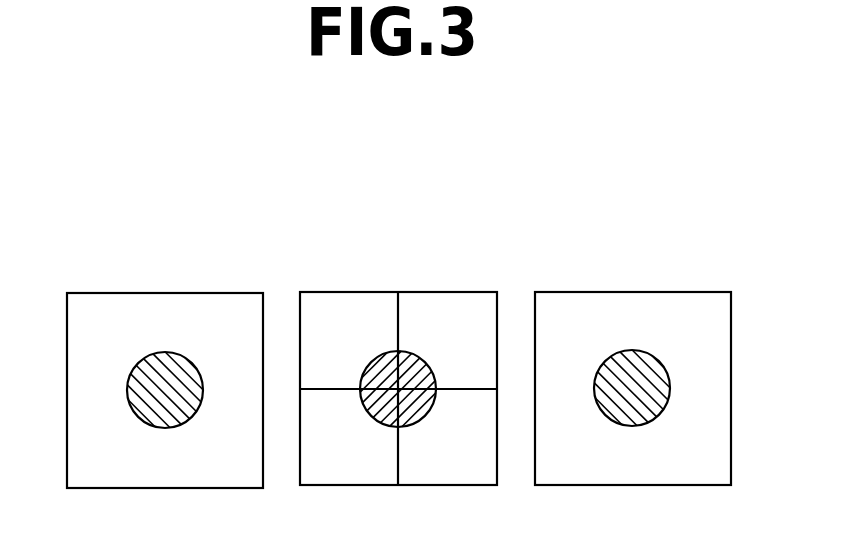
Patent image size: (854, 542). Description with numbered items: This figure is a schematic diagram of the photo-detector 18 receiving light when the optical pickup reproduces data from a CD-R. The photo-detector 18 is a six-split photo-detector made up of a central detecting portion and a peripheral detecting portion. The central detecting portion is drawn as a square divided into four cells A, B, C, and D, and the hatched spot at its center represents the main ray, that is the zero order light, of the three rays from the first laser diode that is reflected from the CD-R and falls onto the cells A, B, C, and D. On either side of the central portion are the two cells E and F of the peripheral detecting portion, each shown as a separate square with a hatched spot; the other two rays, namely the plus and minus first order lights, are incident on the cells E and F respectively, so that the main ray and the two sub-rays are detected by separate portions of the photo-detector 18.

The photo-detector 18 is at (406, 328).
The cell A is at (349, 340).
The cell B is at (447, 340).
The cell C is at (349, 437).
The cell D is at (447, 437).
The cell E is at (165, 390).
The cell F is at (633, 388).